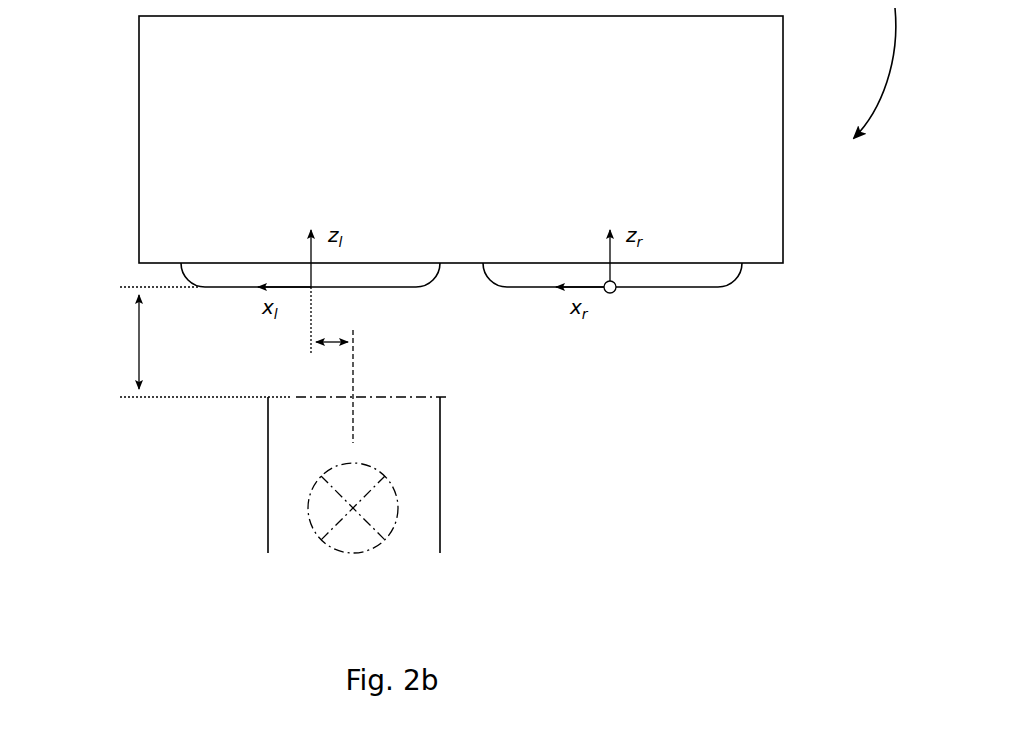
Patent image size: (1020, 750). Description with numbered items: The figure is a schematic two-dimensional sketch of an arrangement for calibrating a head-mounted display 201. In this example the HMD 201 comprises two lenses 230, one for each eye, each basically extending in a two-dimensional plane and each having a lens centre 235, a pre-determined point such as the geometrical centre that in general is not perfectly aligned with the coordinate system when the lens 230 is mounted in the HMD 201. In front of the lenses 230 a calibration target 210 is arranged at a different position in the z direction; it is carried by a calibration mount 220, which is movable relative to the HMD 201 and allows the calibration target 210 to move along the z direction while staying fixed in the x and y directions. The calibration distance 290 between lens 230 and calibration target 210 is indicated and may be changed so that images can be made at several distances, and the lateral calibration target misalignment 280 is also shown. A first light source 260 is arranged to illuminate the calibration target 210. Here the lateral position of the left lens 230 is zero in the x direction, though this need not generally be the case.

The head-mounted display 201 is at (453, 141).
The lens 230 is at (386, 296).
The lens centre 235 is at (625, 280).
The calibration distance 290 is at (132, 337).
The calibration target misalignment 280 is at (334, 352).
The calibration target 210 is at (402, 401).
The calibration mount 220 is at (446, 489).
The first light source 260 is at (388, 545).